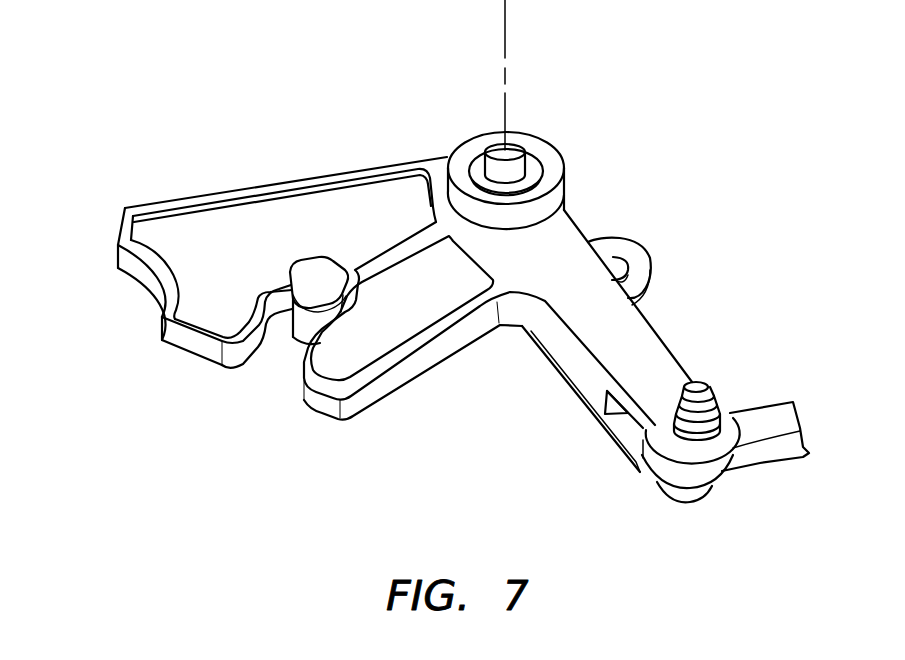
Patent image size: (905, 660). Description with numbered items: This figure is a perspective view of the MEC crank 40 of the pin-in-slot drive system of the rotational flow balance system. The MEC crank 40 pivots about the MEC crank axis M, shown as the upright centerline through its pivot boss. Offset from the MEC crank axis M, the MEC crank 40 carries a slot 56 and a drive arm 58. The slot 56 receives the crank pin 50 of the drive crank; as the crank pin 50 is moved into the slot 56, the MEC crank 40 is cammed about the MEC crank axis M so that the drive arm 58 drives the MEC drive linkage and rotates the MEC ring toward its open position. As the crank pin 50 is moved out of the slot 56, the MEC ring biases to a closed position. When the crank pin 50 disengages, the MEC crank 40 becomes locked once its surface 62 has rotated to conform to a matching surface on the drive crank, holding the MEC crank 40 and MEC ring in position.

The MEC crank 40 is at (357, 167).
The crank pin 50 is at (273, 291).
The slot 56 is at (268, 338).
The drive arm 58 is at (648, 345).
The surface 62 is at (148, 281).
The MEC crank axis M is at (505, 42).